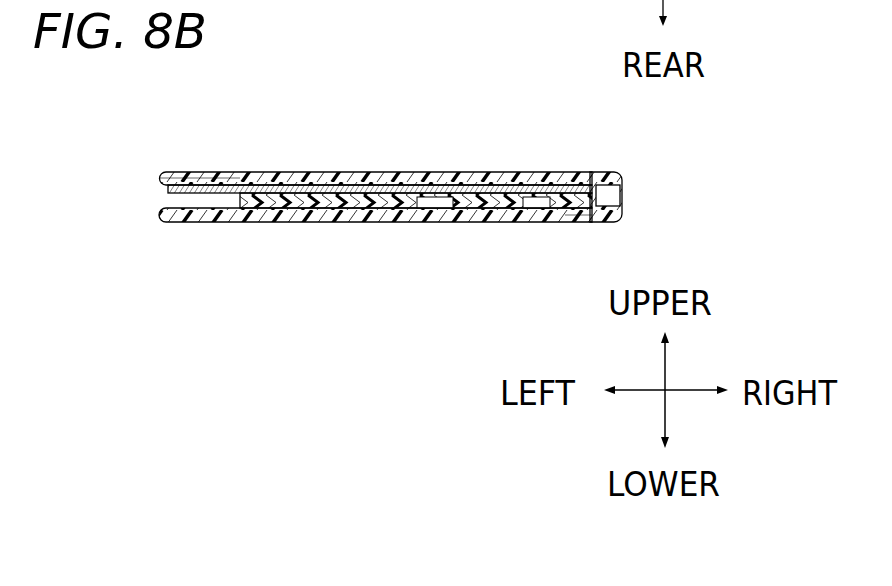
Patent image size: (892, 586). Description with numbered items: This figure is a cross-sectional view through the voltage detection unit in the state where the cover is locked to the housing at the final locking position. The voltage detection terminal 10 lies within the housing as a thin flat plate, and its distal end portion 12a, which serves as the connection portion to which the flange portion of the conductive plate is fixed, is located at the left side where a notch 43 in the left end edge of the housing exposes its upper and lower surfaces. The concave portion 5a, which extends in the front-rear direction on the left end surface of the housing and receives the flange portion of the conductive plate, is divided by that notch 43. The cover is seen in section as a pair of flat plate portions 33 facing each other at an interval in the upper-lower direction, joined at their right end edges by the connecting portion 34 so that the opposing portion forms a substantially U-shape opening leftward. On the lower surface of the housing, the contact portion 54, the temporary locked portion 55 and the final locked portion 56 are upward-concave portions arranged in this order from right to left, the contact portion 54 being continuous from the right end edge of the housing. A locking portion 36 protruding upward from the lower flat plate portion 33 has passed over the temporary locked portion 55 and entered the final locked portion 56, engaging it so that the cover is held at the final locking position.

The voltage detection terminal 10 is at (297, 172).
The distal end portion 12a is at (218, 172).
The locking portion 36 is at (440, 179).
The notch 43 is at (247, 205).
The final locked portion 56 is at (418, 208).
The temporary locked portion 55 is at (535, 208).
The concave portion 5a is at (185, 208).
The contact portion 54 is at (581, 222).
The flat plate portion 33 is at (585, 172).
The connecting portion 34 is at (622, 196).